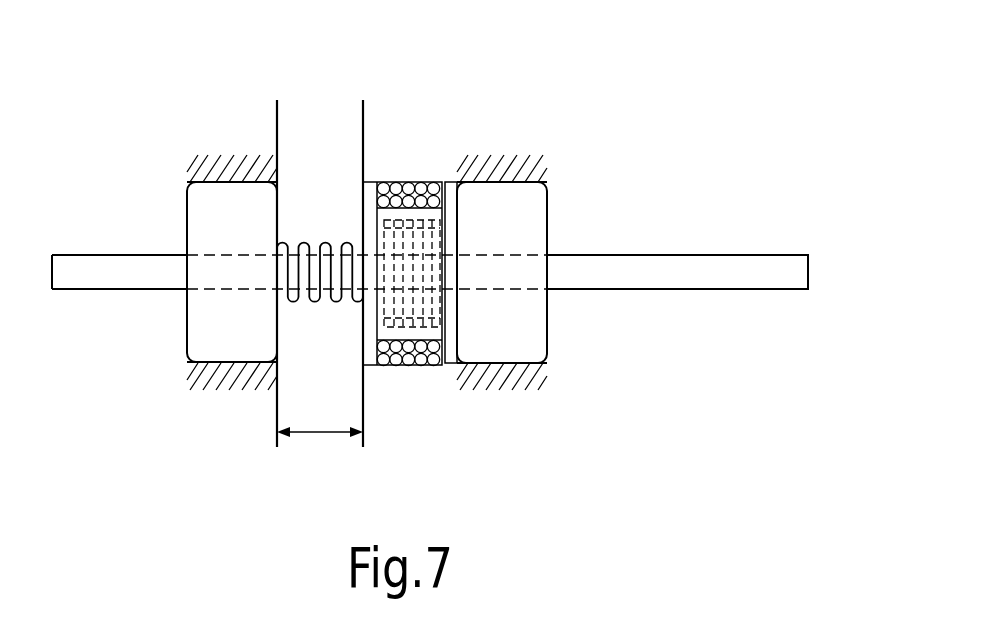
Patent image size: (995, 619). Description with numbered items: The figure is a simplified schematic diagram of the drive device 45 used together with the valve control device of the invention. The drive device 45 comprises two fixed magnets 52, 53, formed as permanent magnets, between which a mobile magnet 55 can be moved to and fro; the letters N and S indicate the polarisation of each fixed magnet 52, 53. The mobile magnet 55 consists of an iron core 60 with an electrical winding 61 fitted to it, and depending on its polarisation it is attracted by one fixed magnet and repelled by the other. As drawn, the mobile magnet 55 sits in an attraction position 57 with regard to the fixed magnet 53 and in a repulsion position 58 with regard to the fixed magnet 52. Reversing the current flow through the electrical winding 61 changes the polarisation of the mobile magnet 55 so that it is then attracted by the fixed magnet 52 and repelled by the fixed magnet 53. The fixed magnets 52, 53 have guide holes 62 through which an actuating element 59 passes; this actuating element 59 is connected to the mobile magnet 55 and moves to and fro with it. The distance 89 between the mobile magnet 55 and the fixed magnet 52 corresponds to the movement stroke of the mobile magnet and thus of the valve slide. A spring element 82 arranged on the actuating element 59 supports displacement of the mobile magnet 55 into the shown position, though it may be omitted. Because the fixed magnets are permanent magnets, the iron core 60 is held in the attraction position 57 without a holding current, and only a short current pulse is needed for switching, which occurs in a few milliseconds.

The drive device 45 is at (572, 63).
The fixed magnet 52 is at (228, 215).
The repulsion position 58 is at (218, 140).
The fixed magnet 53 is at (502, 215).
The attraction position 57 is at (498, 140).
The mobile magnet 55 is at (409, 246).
The actuating element 59 is at (700, 277).
The iron core 60 is at (403, 322).
The electrical winding 61 is at (418, 366).
The guide holes 62 is at (227, 290).
The spring element 82 is at (325, 245).
The distance 89 is at (313, 436).